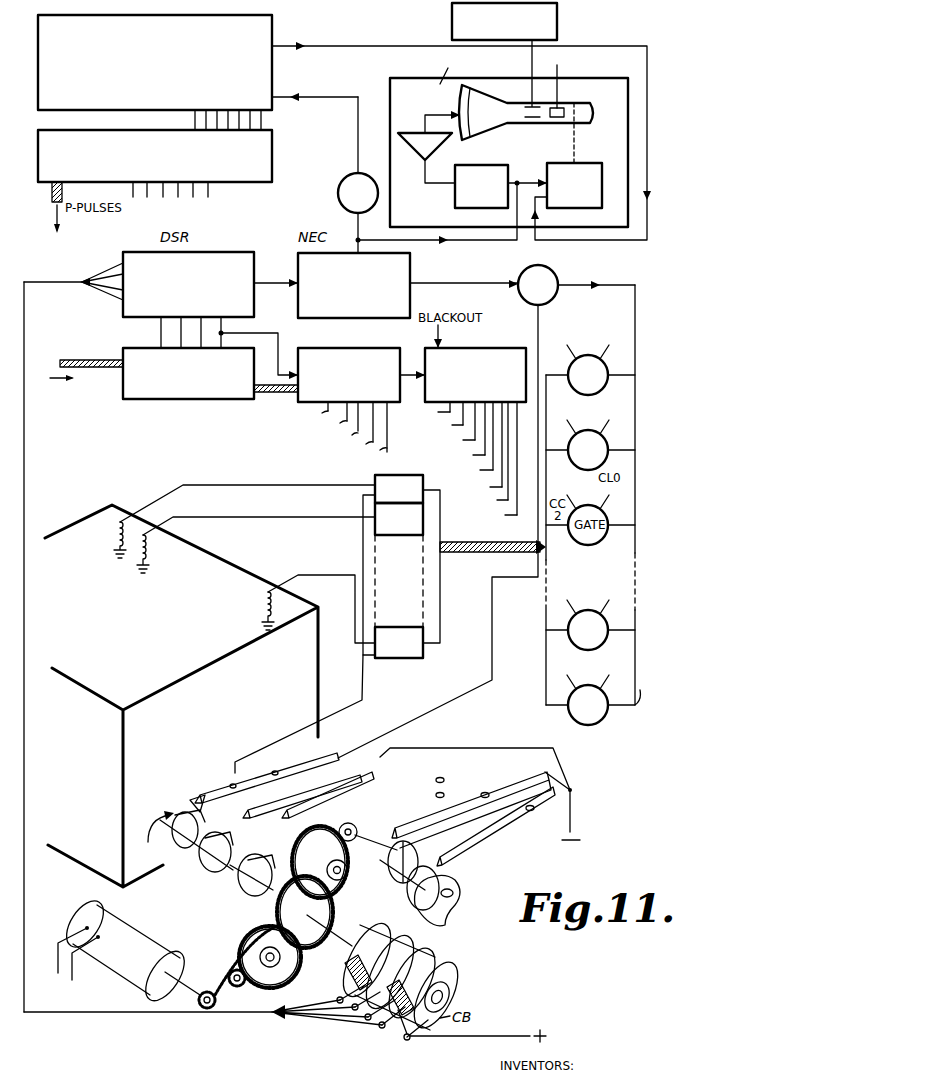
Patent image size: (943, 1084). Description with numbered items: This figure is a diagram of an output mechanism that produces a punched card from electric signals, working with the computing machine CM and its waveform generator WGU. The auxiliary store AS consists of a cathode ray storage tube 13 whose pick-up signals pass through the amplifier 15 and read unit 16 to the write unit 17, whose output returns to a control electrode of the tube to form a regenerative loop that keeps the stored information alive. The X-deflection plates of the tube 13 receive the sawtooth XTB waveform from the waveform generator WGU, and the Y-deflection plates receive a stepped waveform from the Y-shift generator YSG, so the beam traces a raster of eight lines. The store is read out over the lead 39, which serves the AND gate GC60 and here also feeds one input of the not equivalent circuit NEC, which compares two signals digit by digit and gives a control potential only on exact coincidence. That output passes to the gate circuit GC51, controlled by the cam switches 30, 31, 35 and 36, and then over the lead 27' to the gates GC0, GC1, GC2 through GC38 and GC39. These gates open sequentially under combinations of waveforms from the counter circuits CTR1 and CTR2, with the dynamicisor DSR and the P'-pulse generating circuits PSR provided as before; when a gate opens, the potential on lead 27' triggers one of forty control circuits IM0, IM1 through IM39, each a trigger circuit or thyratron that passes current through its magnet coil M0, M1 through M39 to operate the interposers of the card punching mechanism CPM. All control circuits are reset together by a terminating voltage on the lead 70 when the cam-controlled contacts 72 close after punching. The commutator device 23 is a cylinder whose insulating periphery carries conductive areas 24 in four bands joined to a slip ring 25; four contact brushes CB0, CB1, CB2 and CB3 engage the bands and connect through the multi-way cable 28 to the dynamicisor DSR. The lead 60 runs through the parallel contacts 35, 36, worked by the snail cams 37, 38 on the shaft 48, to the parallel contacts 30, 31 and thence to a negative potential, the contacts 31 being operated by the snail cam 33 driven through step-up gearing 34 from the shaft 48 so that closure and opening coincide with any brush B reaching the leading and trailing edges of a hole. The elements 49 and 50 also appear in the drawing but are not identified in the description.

The cathode ray storage tube 13 is at (500, 128).
The amplifier 15 is at (408, 132).
The read unit 16 is at (455, 197).
The write unit 17 is at (580, 165).
The lead 39 is at (358, 112).
The commutator device 23 is at (430, 958).
The conductive areas 24 is at (343, 966).
The slip ring 25 is at (450, 992).
The lead 27' is at (624, 502).
The multi-way cable 28 is at (93, 1012).
The switch contacts 30 is at (450, 805).
The switch contacts 31 is at (493, 822).
The snail cam 33 is at (462, 888).
The step-up gearing 34 is at (325, 892).
The switch contacts 35 is at (258, 805).
The switch contacts 36 is at (320, 812).
The snail cam 37 is at (212, 870).
The snail cam 38 is at (247, 893).
The shaft 48 is at (182, 816).
The motor 49 is at (85, 912).
The drive gear 50 is at (222, 965).
The lead 60 is at (438, 655).
The lead 70 is at (362, 686).
The cam-controlled contacts 72 is at (205, 790).
The computing machine CM is at (265, 32).
The waveform generator WGU is at (252, 173).
The auxiliary store AS is at (390, 88).
The Y-shift generator YSG is at (522, 21).
The XTB waveform XTB is at (571, 87).
The gate GC60 is at (338, 193).
The not equivalent circuit NEC is at (354, 285).
The dynamicisor DSR is at (139, 284).
The P'-pulse generating circuits PSR is at (169, 384).
The counter waveform generator CTR1 is at (368, 346).
The counter circuits CTR2 is at (518, 348).
The gate circuit GC51 is at (552, 270).
The gate GC0 is at (590, 365).
The gate GC1 is at (590, 441).
The gate GC2 is at (511, 548).
The gate GC38 is at (590, 620).
The gate GC39 is at (584, 697).
The card punching mechanism CPM is at (181, 696).
The control circuit IM0 is at (271, 498).
The control circuit IM1 is at (283, 519).
The control circuit IM39 is at (345, 616).
The magnet coil M0 is at (113, 538).
The magnet coil M1 is at (133, 556).
The magnet coil M39 is at (262, 607).
The brush B is at (157, 836).
The contact brush CB0 is at (406, 1040).
The contact brush CB1 is at (370, 1020).
The contact brush CB2 is at (352, 1010).
The contact brush CB3 is at (336, 997).